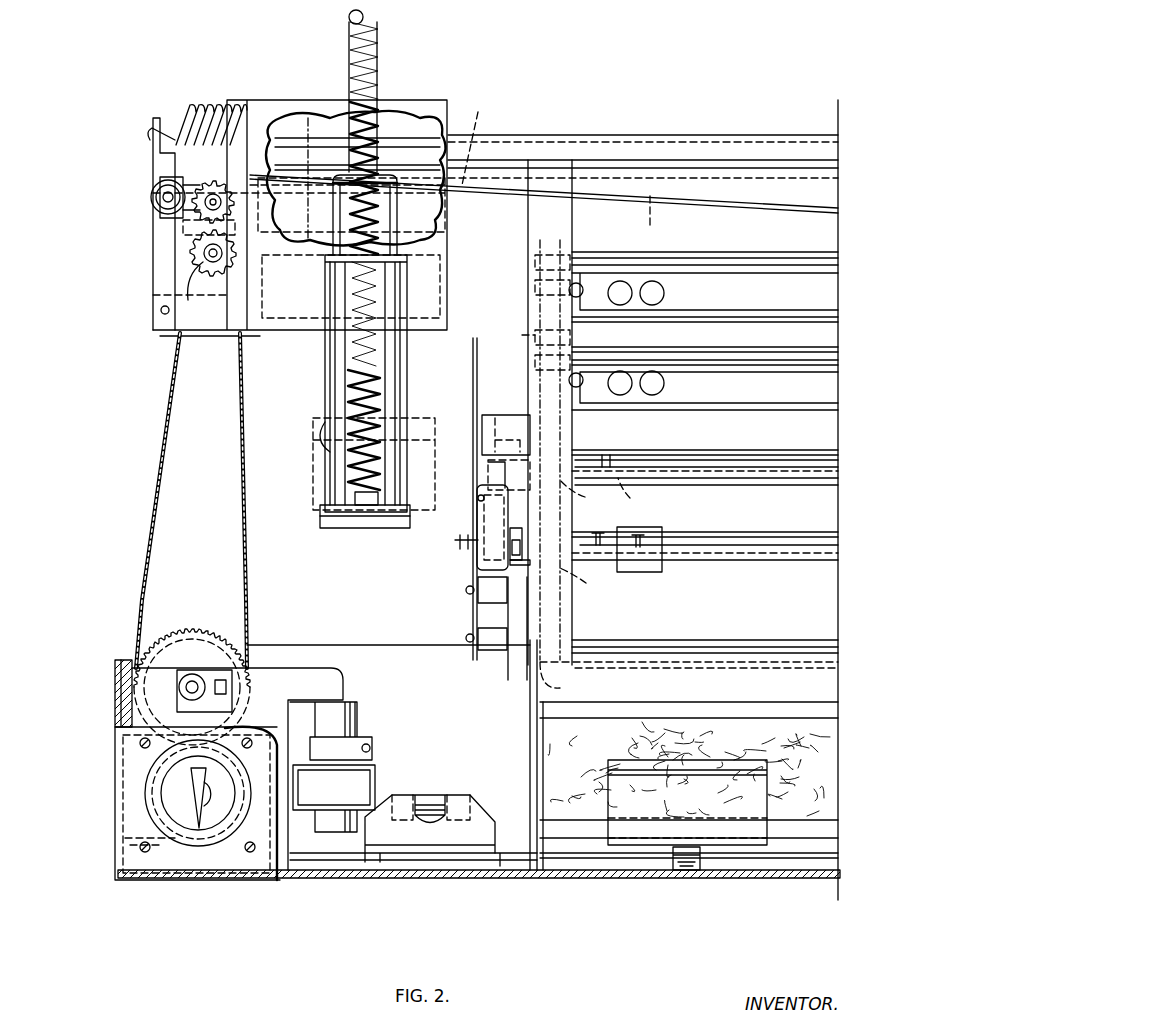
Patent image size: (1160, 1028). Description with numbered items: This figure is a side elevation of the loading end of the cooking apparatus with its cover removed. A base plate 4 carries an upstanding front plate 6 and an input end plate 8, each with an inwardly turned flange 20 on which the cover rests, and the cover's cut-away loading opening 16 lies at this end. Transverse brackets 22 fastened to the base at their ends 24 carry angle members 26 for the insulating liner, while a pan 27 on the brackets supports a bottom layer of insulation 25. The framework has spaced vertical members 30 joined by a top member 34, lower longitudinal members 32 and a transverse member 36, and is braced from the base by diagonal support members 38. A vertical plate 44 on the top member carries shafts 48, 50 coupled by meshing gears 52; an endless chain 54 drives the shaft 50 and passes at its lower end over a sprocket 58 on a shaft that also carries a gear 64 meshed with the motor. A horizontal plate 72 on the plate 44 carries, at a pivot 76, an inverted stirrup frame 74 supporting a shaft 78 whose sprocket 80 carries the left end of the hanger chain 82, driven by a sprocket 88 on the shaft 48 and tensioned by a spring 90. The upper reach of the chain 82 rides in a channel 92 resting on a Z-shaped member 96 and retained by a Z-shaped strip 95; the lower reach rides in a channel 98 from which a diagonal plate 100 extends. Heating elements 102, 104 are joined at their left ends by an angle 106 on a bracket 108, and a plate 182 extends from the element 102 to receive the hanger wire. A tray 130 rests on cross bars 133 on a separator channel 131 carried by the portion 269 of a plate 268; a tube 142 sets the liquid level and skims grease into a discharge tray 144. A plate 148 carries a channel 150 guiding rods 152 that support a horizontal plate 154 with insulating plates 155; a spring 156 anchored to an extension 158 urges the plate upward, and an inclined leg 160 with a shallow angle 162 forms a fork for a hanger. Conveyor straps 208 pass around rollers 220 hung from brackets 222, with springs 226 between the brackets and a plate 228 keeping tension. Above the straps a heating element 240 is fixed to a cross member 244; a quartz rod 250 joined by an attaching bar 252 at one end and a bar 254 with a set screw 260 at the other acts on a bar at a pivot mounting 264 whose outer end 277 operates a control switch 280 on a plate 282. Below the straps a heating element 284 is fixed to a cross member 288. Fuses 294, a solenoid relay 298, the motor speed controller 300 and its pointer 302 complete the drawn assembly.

The base plate 4 is at (572, 878).
The front plate 6 is at (235, 875).
The input end plate 8 is at (319, 133).
The cut-away portion 16 is at (138, 430).
The inwardly turned flanges 20 is at (133, 660).
The brackets 22 is at (672, 860).
The bracket attachment points 24 is at (695, 878).
The bottom layer of insulation 25 is at (820, 742).
The angle members 26 is at (716, 795).
The pan 27 is at (826, 830).
The vertical frame members 30 is at (530, 228).
The lower longitudinally extending members 32 is at (692, 650).
The longitudinally extending top member 34 is at (636, 135).
The transversely extending member 36 is at (530, 690).
The diagonal support members 38 is at (530, 752).
The vertically extending plate 44 is at (244, 100).
The shaft 48 is at (226, 206).
The shaft 50 is at (226, 258).
The meshing gears 52 is at (199, 287).
The endless chain 54 is at (157, 508).
The sprocket 58 is at (208, 630).
The gear 64 is at (175, 632).
The horizontal plate 72 is at (218, 336).
The inverted stirrup frame 74 is at (158, 268).
The pivot 76 is at (160, 312).
The rotatable shaft 78 is at (152, 197).
The sprocket 80 is at (150, 205).
The endless chain 82 is at (651, 222).
The sprocket 88 is at (158, 248).
The spring 90 is at (192, 105).
The channel 92 is at (702, 170).
The Z-shaped strip 95 is at (475, 138).
The Z-shaped member 96 is at (402, 150).
The channel 98 is at (742, 210).
The inclined plate 100 is at (410, 222).
The upper heating element 102 is at (700, 296).
The lower heating element 104 is at (698, 388).
The angle 106 is at (592, 335).
The bracket 108 is at (514, 334).
The tray 130 is at (520, 415).
The downwardly turned channel 131 is at (748, 470).
The cross bars 133 is at (605, 455).
The tube 142 is at (505, 422).
The discharge tray 144 is at (493, 478).
The plate 148 is at (428, 100).
The channel 150 is at (400, 305).
The vertically extending rods 152 is at (338, 388).
The horizontal plate 154 is at (355, 530).
The insulating plates 155 is at (330, 520).
The spring 156 is at (355, 400).
The extension 158 is at (376, 52).
The upwardly extending leg 160 is at (433, 484).
The shallow angle member 162 is at (300, 444).
The plate 182 is at (497, 296).
The conveyor straps 208 is at (408, 645).
The rollers 220 is at (197, 838).
The brackets 222 is at (237, 769).
The springs 226 is at (132, 893).
The plate 228 is at (150, 851).
The heating element 240 is at (764, 562).
The cross member 244 is at (588, 580).
The quartz rod 250 is at (712, 540).
The attaching bar 252 is at (648, 572).
The bar 254 is at (540, 562).
The set screw 260 is at (462, 546).
The pivot mounting 264 is at (525, 530).
The vertical plate 268 is at (588, 492).
The longitudinally extending portion 269 is at (640, 492).
The outermost end of bar 277 is at (520, 535).
The control switch 280 is at (480, 520).
The plate 282 is at (478, 566).
The heating element 284 is at (745, 655).
The cross member 288 is at (575, 650).
The fuses 294 is at (418, 796).
The solenoid relay 298 is at (358, 728).
The interrupter type controller 300 is at (196, 845).
The knob or pointer 302 is at (198, 795).